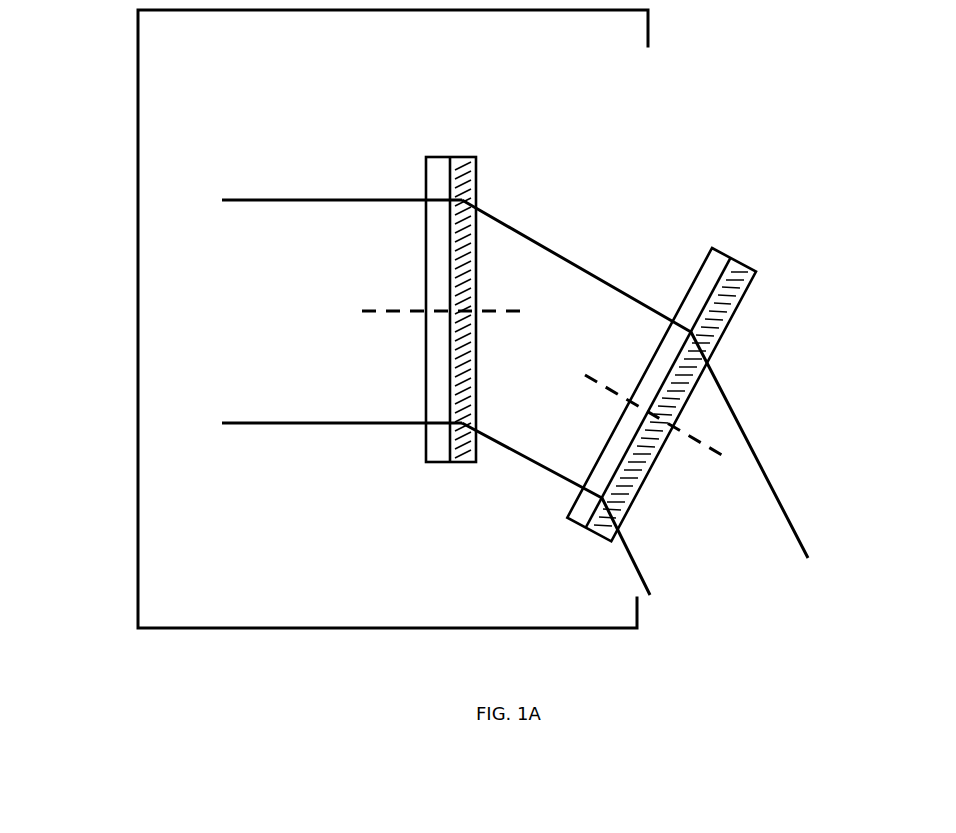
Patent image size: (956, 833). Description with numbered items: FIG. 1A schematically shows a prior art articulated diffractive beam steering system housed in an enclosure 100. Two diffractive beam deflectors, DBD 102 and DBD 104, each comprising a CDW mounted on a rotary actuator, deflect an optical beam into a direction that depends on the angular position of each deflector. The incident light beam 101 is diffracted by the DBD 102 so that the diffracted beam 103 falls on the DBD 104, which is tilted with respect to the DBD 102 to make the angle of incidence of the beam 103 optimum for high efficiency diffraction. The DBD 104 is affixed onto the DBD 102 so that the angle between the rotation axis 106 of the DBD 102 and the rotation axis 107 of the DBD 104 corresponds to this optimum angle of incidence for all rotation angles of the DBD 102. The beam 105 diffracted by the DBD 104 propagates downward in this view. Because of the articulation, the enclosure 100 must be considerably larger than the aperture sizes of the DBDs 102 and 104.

The enclosure 100 is at (158, 112).
The incident light beam 101 is at (243, 202).
The diffractive beam deflector 102 is at (450, 157).
The diffracted beam 103 is at (573, 265).
The diffractive beam deflector 104 is at (730, 258).
The diffracted beam 105 is at (806, 547).
The rotation axis 106 is at (380, 313).
The rotation axis 107 is at (692, 438).